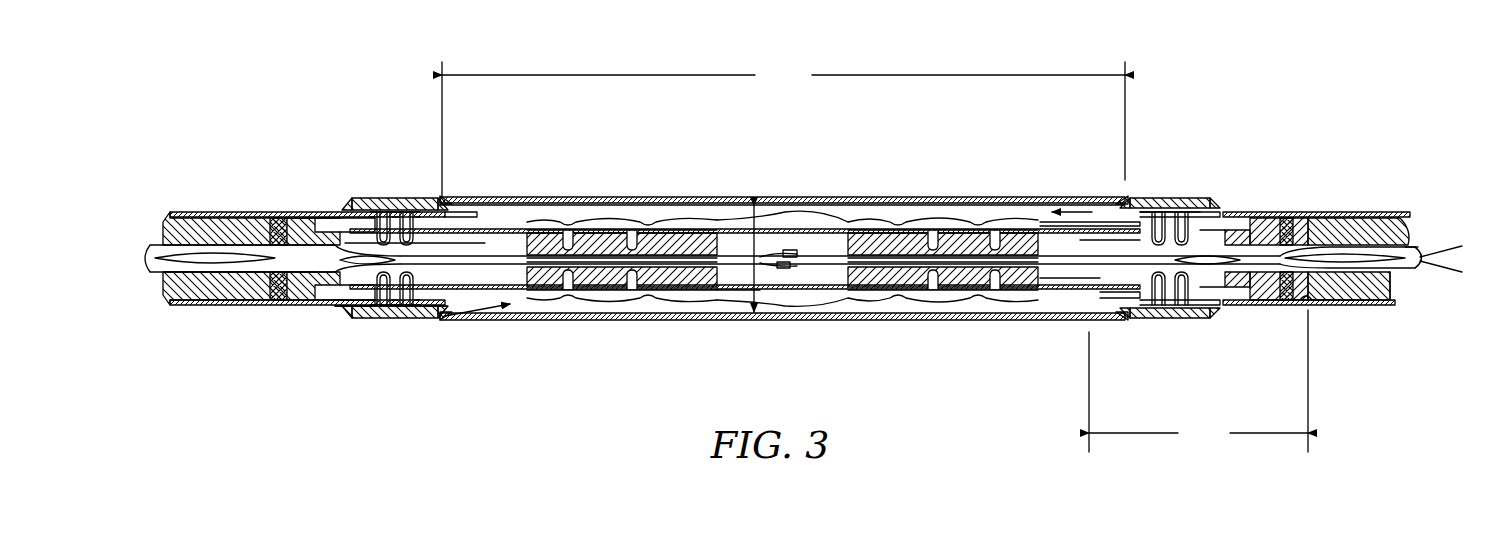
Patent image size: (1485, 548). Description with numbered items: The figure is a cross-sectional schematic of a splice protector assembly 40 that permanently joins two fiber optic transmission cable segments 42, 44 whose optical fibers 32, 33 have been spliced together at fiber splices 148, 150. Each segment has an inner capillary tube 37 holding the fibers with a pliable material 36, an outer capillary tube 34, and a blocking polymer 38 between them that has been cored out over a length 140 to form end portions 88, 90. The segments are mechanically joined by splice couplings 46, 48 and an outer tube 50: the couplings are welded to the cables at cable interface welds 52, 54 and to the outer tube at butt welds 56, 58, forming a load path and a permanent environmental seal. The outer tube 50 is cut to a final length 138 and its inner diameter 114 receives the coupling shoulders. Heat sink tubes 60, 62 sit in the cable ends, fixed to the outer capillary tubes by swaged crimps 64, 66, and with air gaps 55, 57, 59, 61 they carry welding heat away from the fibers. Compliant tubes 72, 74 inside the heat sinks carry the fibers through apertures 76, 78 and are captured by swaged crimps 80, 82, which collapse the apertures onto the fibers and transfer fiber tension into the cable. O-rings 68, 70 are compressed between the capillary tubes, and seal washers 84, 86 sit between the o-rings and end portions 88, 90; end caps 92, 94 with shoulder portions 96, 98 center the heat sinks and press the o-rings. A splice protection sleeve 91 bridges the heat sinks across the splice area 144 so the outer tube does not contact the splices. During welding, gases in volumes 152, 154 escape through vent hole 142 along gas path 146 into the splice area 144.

The optical fiber 32 is at (1462, 245).
The optical fiber 33 is at (1462, 272).
The outer capillary tube 34 is at (1378, 305).
The pliable material 36 is at (1424, 254).
The inner capillary tube 37 is at (1417, 242).
The blocking polymer 38 is at (1345, 215).
The splice protector assembly 40 is at (975, 146).
The transmission cable segment 42 is at (222, 128).
The transmission cable segment 44 is at (1325, 126).
The splice coupling 46 is at (410, 212).
The splice coupling 48 is at (1158, 212).
The outer tube 50 is at (621, 197).
The cable interface weld 52 is at (353, 198).
The cable interface weld 54 is at (1213, 198).
The air gap 55 is at (444, 318).
The butt weld 56 is at (446, 197).
The air gap 57 is at (473, 240).
The butt weld 58 is at (1121, 196).
The air gap 59 is at (1108, 292).
The heat sink tube 60 is at (513, 297).
The air gap 61 is at (1088, 282).
The heat sink tube 62 is at (1048, 228).
The swaged crimp 64 is at (403, 306).
The swaged crimp 66 is at (1182, 306).
The o-ring 68 is at (272, 300).
The o-ring 70 is at (1294, 214).
The compliant tube 72 is at (708, 293).
The compliant tube 74 is at (890, 292).
The aperture 76 is at (660, 233).
The aperture 78 is at (905, 233).
The swaged crimp 80 is at (632, 292).
The swaged crimp 82 is at (995, 292).
The seal washer 84 is at (275, 218).
The seal washer 86 is at (1286, 300).
The end portion 88 is at (248, 298).
The end portion 90 is at (1311, 304).
The splice protection sleeve 91 is at (723, 297).
The end cap 92 is at (302, 300).
The end cap 94 is at (1286, 222).
The shoulder portion 96 is at (327, 230).
The shoulder portion 98 is at (1233, 222).
The inner diameter 114 is at (754, 205).
The final length 138 is at (783, 129).
The length 140 is at (1198, 381).
The vent hole 142 is at (362, 315).
The splice area 144 is at (810, 298).
The gas path 146 is at (1092, 212).
The fiber splice 148 is at (798, 222).
The fiber splice 150 is at (787, 250).
The volume 152 is at (336, 312).
The volume 154 is at (1217, 306).